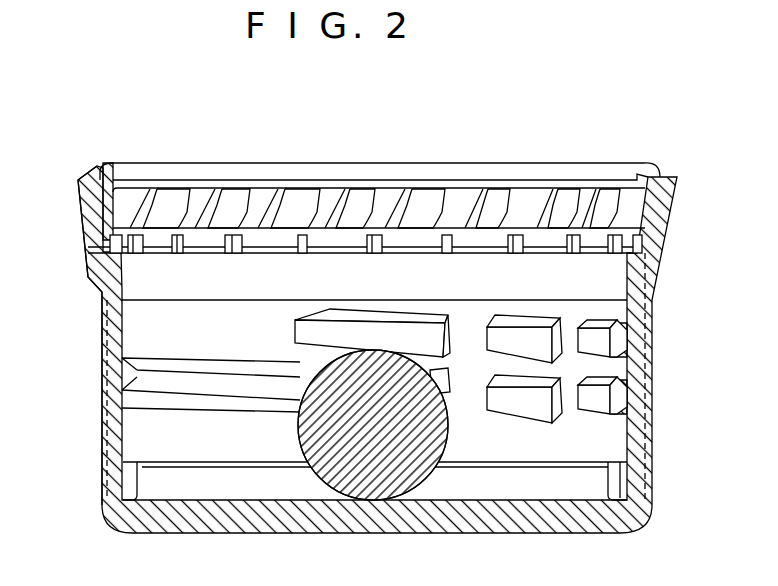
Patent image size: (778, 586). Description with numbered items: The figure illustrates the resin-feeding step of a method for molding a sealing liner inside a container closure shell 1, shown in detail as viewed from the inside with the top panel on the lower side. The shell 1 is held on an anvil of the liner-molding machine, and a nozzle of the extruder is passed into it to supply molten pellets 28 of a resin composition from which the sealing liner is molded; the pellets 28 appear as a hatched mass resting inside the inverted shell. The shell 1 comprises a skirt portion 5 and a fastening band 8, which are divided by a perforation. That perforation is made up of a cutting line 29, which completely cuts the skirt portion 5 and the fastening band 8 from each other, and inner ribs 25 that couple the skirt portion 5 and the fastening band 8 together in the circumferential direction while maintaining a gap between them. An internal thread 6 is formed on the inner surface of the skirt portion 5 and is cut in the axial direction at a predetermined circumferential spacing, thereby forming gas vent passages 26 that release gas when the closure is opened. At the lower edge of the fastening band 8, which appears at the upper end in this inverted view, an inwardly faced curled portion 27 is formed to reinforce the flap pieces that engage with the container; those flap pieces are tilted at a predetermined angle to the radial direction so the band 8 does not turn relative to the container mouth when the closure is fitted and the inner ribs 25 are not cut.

The container closure shell 1 is at (99, 531).
The skirt portion 5 is at (100, 366).
The internal thread 6 is at (530, 337).
The fastening band 8 is at (82, 208).
The inner ribs 25 is at (180, 254).
The gas vent passages 26 is at (472, 413).
The inwardly faced curled portion 27 is at (650, 160).
The molten pellets 28 is at (298, 445).
The cutting line 29 is at (267, 249).